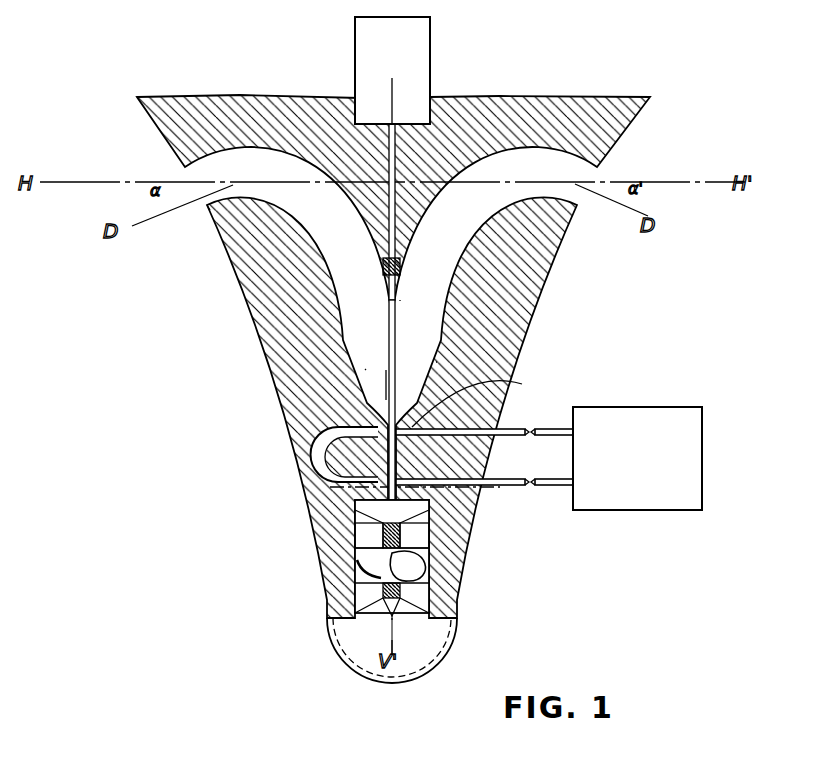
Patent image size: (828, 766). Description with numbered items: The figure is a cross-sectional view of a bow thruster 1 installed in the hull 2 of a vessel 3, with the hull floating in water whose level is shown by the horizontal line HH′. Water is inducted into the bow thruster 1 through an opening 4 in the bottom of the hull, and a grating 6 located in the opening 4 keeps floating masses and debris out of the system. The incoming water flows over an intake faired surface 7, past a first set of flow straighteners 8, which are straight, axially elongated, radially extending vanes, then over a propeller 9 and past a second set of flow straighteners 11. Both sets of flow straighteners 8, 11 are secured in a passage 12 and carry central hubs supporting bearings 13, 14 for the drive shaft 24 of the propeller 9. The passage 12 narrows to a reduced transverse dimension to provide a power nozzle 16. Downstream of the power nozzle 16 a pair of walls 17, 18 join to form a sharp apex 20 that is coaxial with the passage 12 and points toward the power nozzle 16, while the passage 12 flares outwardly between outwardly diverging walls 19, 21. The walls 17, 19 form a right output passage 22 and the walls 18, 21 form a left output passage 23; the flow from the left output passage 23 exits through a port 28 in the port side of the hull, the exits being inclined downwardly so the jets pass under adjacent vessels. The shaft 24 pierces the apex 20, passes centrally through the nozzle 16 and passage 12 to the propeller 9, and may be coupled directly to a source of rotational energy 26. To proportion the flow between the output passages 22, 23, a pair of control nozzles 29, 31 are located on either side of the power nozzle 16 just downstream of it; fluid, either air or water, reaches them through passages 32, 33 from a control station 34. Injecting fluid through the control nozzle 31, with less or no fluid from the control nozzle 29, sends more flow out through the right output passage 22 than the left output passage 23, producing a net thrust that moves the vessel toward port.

The bow thruster 1 is at (362, 370).
The hull 2 is at (322, 581).
The vessel 3 is at (240, 363).
The opening 4 is at (352, 627).
The grating 6 is at (430, 683).
The intake faired surface 7 is at (440, 628).
The first set of flow straighteners 8 is at (428, 601).
The propeller 9 is at (432, 568).
The second set of flow straighteners 11 is at (422, 536).
The passage 12 is at (350, 566).
The bearing 13 is at (347, 598).
The bearing 14 is at (362, 531).
The power nozzle 16 is at (420, 447).
The wall 17 is at (404, 277).
The wall 18 is at (382, 269).
The outwardly diverging wall 19 is at (437, 363).
The sharp apex 20 is at (432, 314).
The outwardly diverging wall 21 is at (378, 383).
The right output passage 22 is at (551, 162).
The left output passage 23 is at (217, 163).
The drive shaft 24 is at (390, 350).
The source of rotational energy 26 is at (432, 48).
The port 28 is at (202, 203).
The control nozzle 29 is at (479, 400).
The control nozzle 31 is at (375, 406).
The passage 32 is at (503, 429).
The passage 33 is at (503, 479).
The control station 34 is at (632, 402).